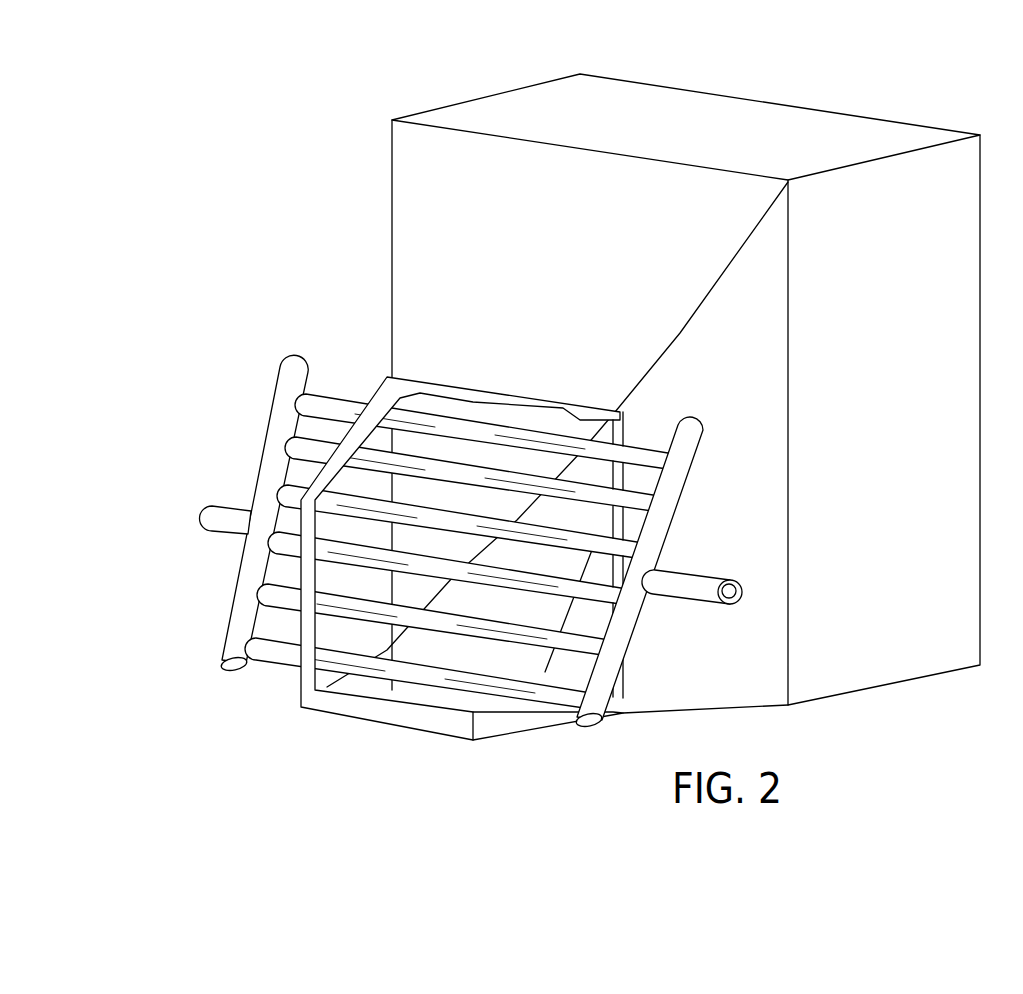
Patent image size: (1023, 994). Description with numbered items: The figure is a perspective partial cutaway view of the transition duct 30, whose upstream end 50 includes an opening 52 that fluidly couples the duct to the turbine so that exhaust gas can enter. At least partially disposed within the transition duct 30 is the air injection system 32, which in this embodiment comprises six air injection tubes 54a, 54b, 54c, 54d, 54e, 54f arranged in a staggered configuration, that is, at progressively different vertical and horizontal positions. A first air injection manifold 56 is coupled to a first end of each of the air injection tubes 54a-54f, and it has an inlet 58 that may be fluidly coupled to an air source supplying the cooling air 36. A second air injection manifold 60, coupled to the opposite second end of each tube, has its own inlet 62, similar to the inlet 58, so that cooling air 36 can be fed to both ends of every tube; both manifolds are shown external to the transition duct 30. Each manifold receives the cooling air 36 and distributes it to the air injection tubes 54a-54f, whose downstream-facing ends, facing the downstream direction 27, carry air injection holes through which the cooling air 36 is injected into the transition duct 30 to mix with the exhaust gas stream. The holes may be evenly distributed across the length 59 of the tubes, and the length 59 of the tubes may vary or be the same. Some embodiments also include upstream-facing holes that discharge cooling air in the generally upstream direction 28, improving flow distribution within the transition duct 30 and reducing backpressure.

The downstream direction 27 is at (800, 87).
The upstream direction 28 is at (187, 790).
The transition duct 30 is at (392, 160).
The air injection system 32 is at (237, 398).
The cooling air 36 is at (214, 513).
The upstream end 50 is at (447, 540).
The opening 52 is at (447, 712).
The air injection tube 54a is at (640, 450).
The air injection tube 54b is at (279, 443).
The air injection tube 54c is at (273, 492).
The air injection tube 54d is at (605, 592).
The air injection tube 54e is at (590, 640).
The air injection tube 54f is at (527, 687).
The first air injection manifold 56 is at (677, 466).
The inlet 58 is at (695, 582).
The length 59 is at (690, 397).
The second air injection manifold 60 is at (291, 376).
The inlet 62 is at (225, 522).